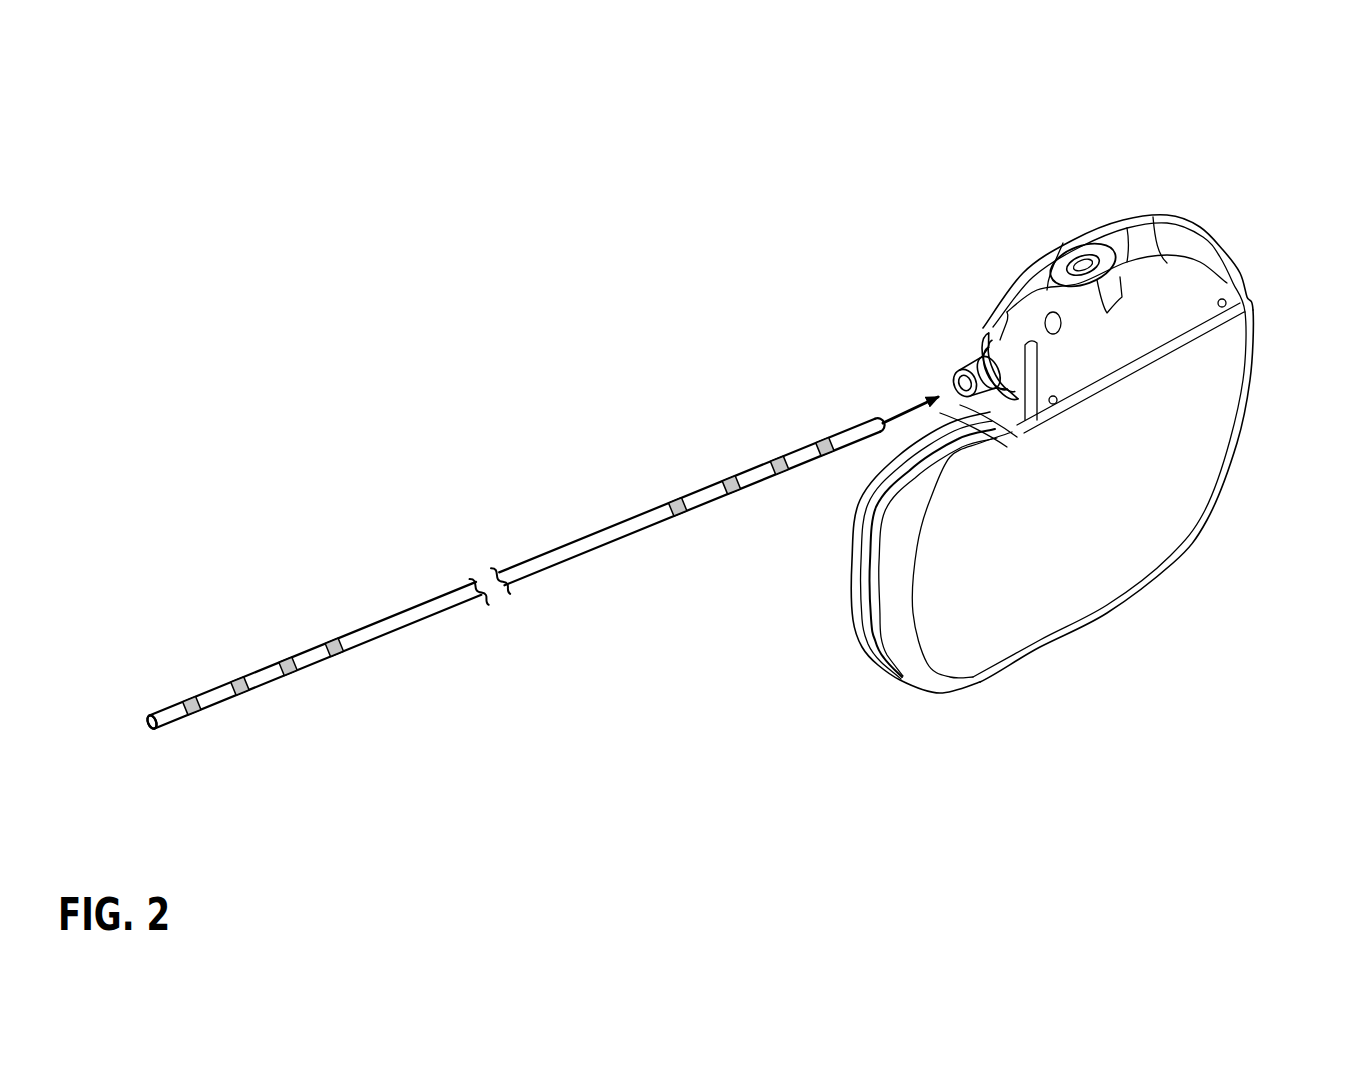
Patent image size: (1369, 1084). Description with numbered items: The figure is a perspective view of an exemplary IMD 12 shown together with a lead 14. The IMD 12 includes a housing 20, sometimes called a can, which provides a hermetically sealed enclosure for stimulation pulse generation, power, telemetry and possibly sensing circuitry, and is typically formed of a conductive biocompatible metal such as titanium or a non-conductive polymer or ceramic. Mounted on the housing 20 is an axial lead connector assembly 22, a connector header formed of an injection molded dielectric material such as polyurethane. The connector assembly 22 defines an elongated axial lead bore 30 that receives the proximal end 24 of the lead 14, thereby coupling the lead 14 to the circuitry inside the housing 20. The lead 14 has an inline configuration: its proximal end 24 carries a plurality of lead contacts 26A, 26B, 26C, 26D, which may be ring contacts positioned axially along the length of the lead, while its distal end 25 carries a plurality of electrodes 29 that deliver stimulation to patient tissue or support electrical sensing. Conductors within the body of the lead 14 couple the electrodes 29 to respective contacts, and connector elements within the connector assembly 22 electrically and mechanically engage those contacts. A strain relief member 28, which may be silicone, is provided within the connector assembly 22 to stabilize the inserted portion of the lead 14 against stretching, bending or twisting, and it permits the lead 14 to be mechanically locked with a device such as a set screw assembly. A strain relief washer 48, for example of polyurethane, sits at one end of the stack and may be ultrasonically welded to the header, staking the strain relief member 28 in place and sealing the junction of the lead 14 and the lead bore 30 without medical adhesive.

The IMD 12 is at (371, 177).
The lead 14 is at (422, 623).
The housing 20 is at (1233, 477).
The axial lead connector assembly 22 is at (1097, 205).
The proximal end 24 is at (843, 470).
The distal end 25 is at (152, 730).
The lead contact 26A is at (672, 496).
The lead contact 26B is at (721, 476).
The lead contact 26C is at (769, 460).
The lead contact 26D is at (817, 442).
The strain relief member 28 is at (968, 362).
The electrodes 29 is at (335, 648).
The lead bore 30 is at (953, 377).
The strain relief washer 48 is at (993, 333).